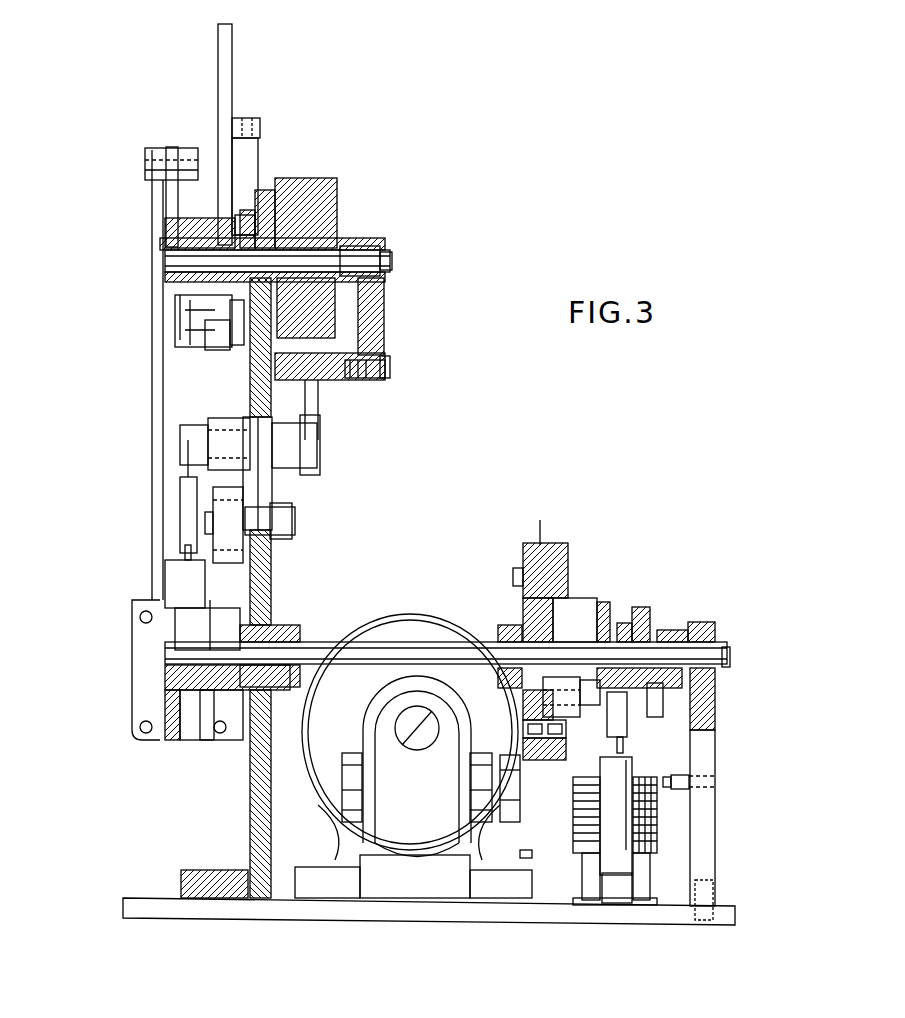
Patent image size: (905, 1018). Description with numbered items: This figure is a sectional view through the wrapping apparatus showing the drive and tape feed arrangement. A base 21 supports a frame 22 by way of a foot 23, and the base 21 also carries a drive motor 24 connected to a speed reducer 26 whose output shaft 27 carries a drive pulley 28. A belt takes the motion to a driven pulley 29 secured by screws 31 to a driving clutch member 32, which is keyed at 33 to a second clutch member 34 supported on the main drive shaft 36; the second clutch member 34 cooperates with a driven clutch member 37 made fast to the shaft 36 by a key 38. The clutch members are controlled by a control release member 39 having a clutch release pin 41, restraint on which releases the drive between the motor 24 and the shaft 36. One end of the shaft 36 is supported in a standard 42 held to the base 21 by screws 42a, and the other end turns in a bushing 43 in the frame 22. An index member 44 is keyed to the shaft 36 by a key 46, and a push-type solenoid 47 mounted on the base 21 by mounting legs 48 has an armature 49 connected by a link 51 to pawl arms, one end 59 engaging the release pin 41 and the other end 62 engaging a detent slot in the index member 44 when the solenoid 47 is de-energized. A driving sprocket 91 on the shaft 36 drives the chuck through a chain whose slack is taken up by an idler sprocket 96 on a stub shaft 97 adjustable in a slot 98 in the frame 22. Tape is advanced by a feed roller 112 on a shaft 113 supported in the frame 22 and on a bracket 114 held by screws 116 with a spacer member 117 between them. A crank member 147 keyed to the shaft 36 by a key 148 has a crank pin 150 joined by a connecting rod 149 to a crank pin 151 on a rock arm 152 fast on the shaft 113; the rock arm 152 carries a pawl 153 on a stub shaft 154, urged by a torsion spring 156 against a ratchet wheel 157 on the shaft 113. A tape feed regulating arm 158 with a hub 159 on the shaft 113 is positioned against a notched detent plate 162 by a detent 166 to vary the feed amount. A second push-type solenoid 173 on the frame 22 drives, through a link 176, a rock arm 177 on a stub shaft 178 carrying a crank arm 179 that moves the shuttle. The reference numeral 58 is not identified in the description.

The base 21 is at (650, 908).
The frame 22 is at (265, 592).
The foot 23 is at (212, 870).
The drive motor 24 is at (418, 622).
The speed reducer 26 is at (360, 797).
The output shaft 27 is at (497, 777).
The drive pulley 28 is at (527, 860).
The driven pulley 29 is at (545, 545).
The screws 31 is at (515, 572).
The driving clutch member 32 is at (568, 556).
The key 33 is at (502, 626).
The second clutch member 34 is at (558, 628).
The main drive shaft 36 is at (383, 650).
The driven clutch member 37 is at (603, 625).
The key 38 is at (573, 660).
The control release member 39 is at (640, 620).
The clutch release pin 41 is at (615, 702).
The standard 42 is at (715, 725).
The screws 42a is at (700, 920).
The bushing 43 is at (272, 630).
The index member 44 is at (672, 632).
The key 46 is at (680, 630).
The push-type solenoid 47 is at (678, 820).
The mounting legs 48 is at (640, 880).
The armature 49 is at (632, 775).
The link 51 is at (630, 737).
The adjusting screw 58 is at (685, 790).
The end of pawl arm 59 is at (620, 715).
The end of second pawl arm 62 is at (648, 712).
The driving sprocket 91 is at (205, 745).
The idler sprocket 96 is at (235, 523).
The stub shaft 97 is at (298, 520).
The slot 98 is at (268, 488).
The feed roller 112 is at (335, 180).
The shaft 113 is at (390, 262).
The bracket 114 is at (385, 322).
The screws 116 is at (388, 368).
The spacer member 117 is at (355, 382).
The crank member 147 is at (170, 628).
The key 148 is at (190, 742).
The connecting rod 149 is at (152, 462).
The crank pin 150 is at (175, 560).
The crank pin 151 is at (148, 158).
The rock arm 152 is at (170, 197).
The pawl 153 is at (215, 348).
The stub shaft 154 is at (240, 335).
The torsion spring 156 is at (180, 318).
The ratchet wheel 157 is at (170, 226).
The tape feed regulating arm 158 is at (232, 37).
The hub 159 is at (228, 222).
The notched detent plate 162 is at (258, 155).
The detent 166 is at (258, 128).
The push-type solenoid 173 is at (132, 700).
The link 176 is at (185, 490).
The rock arm 177 is at (180, 462).
The stub shaft 178 is at (300, 448).
The crank arm 179 is at (320, 416).